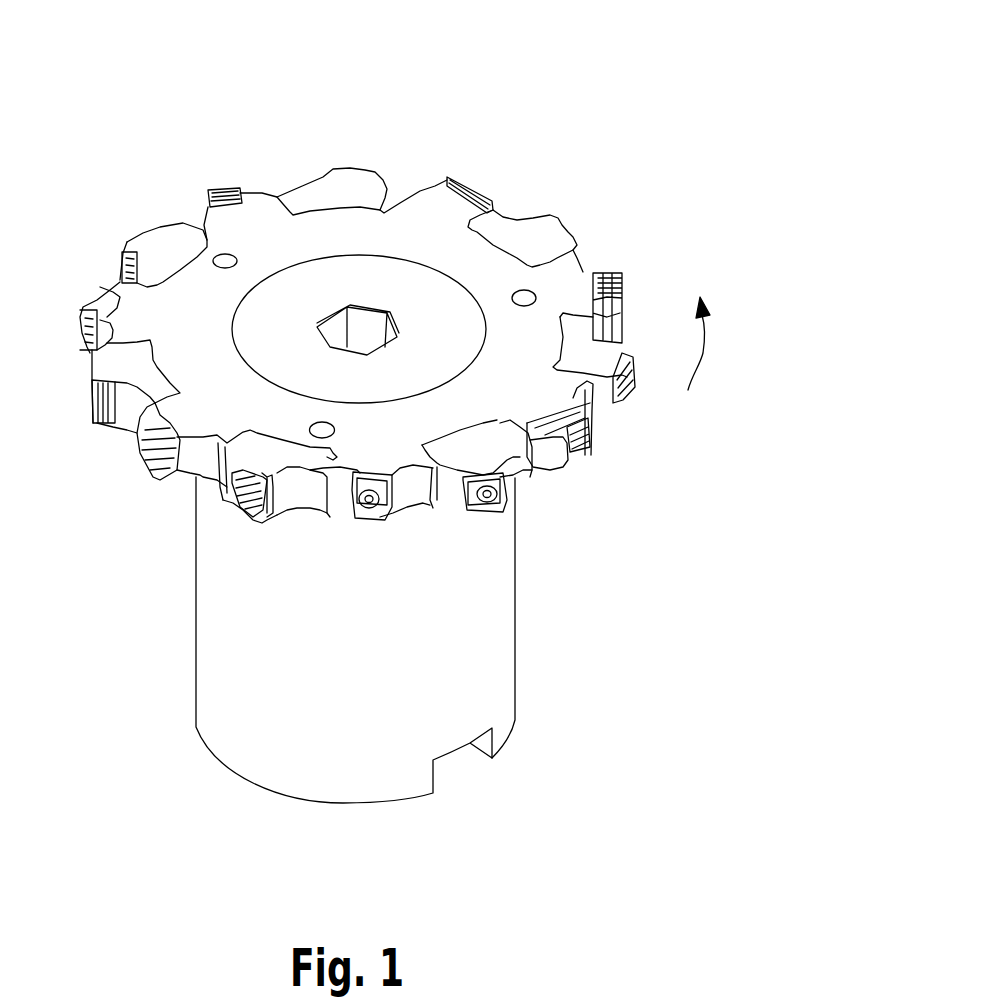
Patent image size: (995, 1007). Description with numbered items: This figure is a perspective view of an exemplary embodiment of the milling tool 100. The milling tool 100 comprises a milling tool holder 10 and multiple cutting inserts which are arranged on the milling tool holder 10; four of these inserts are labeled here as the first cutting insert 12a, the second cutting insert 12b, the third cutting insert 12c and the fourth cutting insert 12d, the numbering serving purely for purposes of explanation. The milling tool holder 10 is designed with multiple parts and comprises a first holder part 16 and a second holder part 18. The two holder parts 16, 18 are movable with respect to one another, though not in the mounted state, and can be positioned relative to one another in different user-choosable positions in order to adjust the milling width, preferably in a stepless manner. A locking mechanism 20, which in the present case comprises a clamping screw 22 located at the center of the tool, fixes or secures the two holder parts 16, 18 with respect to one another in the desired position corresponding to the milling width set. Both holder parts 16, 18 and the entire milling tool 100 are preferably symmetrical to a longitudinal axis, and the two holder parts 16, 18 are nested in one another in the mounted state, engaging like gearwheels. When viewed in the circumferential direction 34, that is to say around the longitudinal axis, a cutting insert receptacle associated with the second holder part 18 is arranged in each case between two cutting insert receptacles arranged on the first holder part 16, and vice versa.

The milling tool 100 is at (586, 126).
The milling tool holder 10 is at (131, 616).
The first cutting insert 12a is at (263, 520).
The second cutting insert 12b is at (480, 520).
The third cutting insert 12c is at (367, 520).
The fourth cutting insert 12d is at (593, 450).
The first holder part 16 is at (490, 660).
The second holder part 18 is at (575, 297).
The locking mechanism 20 is at (383, 280).
The clamping screw 22 is at (358, 330).
The circumferential direction 34 is at (703, 356).